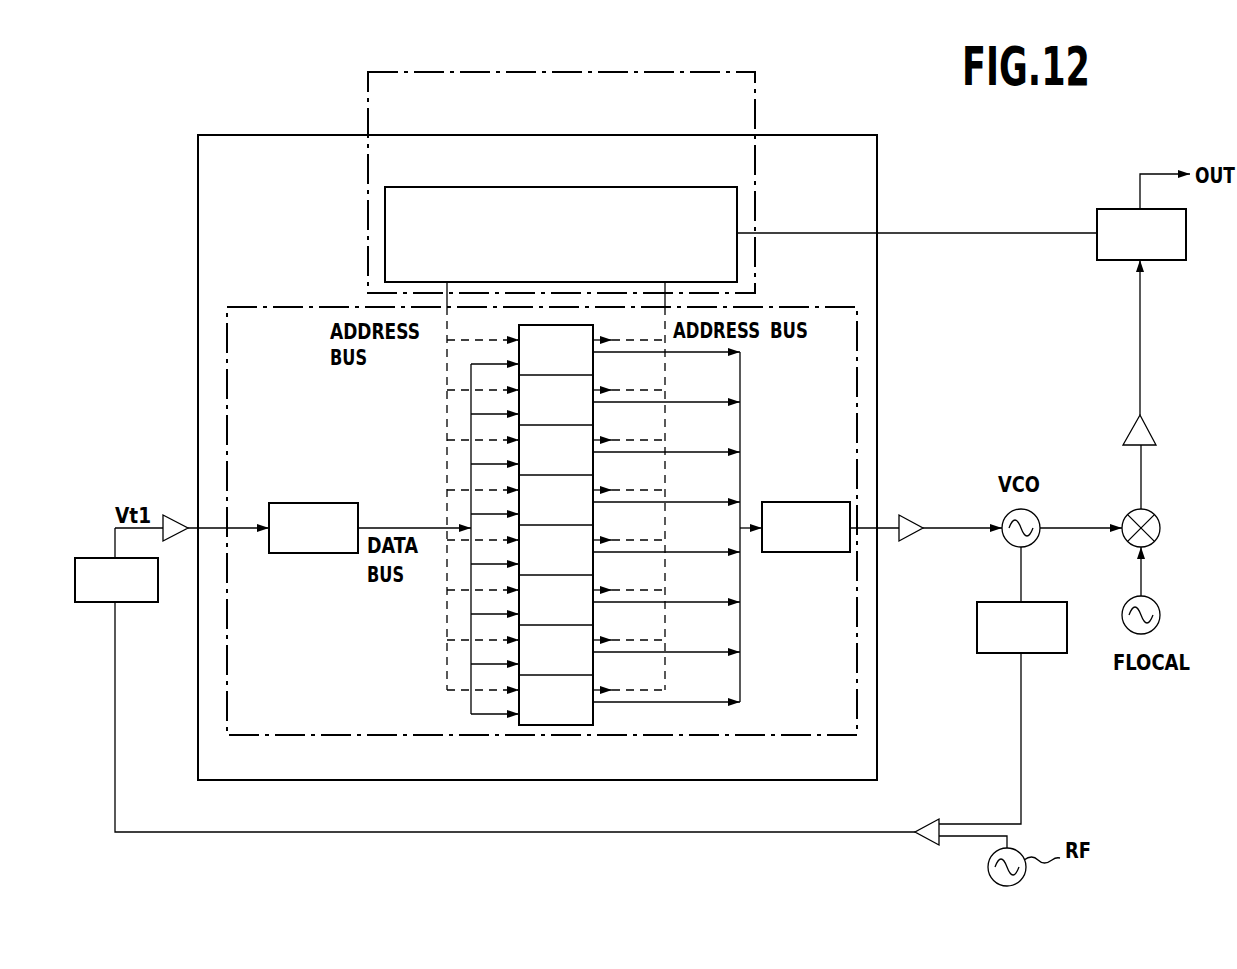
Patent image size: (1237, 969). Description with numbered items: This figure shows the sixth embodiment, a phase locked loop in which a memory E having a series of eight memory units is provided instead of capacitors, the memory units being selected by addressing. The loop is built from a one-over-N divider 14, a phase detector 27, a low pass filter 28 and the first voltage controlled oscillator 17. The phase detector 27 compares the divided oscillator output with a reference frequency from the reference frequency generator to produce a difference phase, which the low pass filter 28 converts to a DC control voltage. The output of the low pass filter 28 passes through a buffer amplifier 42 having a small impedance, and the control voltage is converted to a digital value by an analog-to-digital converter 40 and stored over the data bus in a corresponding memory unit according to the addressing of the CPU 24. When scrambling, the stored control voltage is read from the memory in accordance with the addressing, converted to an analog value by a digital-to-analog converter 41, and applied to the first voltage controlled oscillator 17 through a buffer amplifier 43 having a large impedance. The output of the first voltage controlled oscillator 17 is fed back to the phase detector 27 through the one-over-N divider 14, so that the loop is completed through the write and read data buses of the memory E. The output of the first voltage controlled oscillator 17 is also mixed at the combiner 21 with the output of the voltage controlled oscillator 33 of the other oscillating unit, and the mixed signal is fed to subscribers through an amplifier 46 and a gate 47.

The CPU 24 is at (755, 100).
The memory E is at (535, 725).
The A/D converter 40 is at (307, 503).
The D/A converter 41 is at (800, 502).
The buffer amplifier 42 is at (176, 516).
The buffer amplifier 43 is at (912, 516).
The first VCO 17 is at (1036, 514).
The combiner 21 is at (1160, 528).
The VCO 33 is at (1158, 607).
The amplifier 46 is at (1128, 430).
The gate 47 is at (1115, 260).
The 1/N divider 14 is at (977, 627).
The phase detector 27 is at (927, 820).
The low pass filter 28 is at (150, 602).